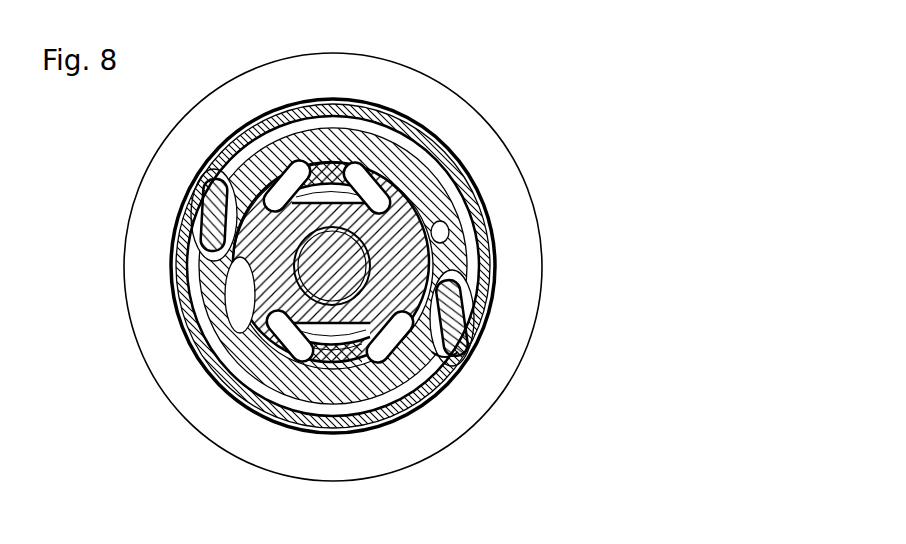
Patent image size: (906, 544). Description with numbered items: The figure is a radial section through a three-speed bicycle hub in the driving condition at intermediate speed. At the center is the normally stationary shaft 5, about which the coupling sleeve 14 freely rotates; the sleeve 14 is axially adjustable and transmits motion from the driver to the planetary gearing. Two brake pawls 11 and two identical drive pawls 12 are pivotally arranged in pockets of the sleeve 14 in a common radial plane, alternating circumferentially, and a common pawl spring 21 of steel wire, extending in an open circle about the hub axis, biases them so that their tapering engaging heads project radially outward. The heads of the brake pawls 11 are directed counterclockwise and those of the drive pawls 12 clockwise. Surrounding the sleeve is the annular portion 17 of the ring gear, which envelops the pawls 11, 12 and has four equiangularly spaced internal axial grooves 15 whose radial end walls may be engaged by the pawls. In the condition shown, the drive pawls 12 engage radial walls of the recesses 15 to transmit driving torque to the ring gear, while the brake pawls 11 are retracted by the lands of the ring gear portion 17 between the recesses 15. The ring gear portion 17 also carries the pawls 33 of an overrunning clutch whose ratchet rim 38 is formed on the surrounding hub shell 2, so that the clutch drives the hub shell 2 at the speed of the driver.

The hub shell 2 is at (209, 167).
The shaft 5 is at (240, 330).
The brake pawls 11 is at (357, 175).
The drive pawls 12 is at (293, 173).
The coupling sleeve 14 is at (243, 267).
The internal axial grooves 15 is at (437, 238).
The annular portion of the ring gear 17 is at (408, 162).
The pawl spring 21 is at (333, 340).
The pawls 33 is at (462, 300).
The ratchet rim 38 is at (447, 350).